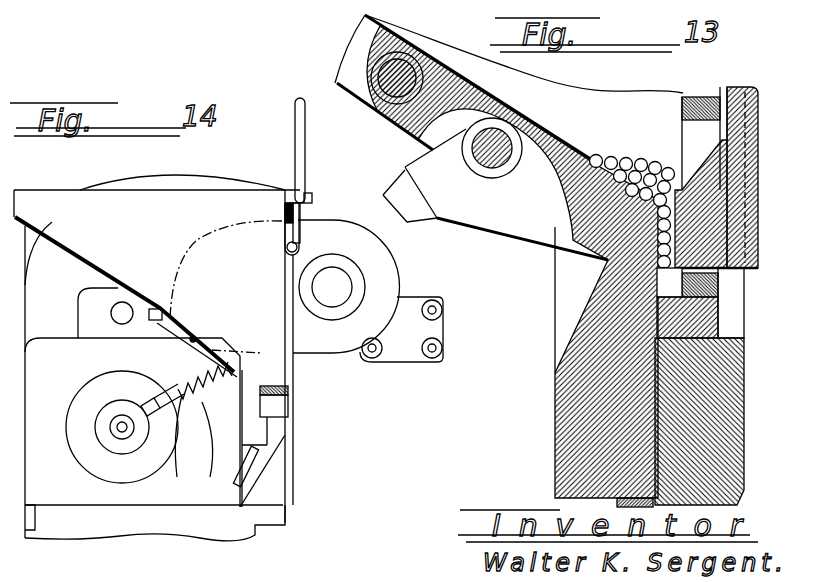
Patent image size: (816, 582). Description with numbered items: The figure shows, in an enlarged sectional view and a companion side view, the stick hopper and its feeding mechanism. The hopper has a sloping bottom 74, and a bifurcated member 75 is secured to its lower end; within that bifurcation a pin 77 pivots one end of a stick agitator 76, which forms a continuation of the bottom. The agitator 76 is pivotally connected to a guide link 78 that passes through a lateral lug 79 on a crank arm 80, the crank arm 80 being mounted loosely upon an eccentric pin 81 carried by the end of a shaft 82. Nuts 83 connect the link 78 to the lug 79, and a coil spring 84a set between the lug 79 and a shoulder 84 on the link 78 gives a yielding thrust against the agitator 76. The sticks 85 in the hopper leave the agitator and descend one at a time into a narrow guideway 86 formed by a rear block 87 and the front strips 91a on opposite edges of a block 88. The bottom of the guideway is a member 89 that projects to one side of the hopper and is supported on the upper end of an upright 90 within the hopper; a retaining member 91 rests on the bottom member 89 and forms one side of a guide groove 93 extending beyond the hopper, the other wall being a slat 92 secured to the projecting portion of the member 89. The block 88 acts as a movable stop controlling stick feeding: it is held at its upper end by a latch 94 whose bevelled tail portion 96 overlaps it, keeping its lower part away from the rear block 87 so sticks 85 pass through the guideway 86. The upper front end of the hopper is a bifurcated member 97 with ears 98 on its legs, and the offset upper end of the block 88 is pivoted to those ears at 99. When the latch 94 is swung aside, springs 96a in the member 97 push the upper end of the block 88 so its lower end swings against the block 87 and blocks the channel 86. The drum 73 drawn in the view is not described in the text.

In FIG. 14, the drum 73 is at (160, 210).
In FIG. 14, the sloping bottom 74 is at (114, 278).
In FIG. 14, the bifurcated member 75 is at (158, 322).
In FIG. 13, the bifurcated member 75 is at (358, 87).
In FIG. 14, the stick agitator 76 is at (233, 382).
In FIG. 13, the stick agitator 76 is at (570, 165).
In FIG. 14, the pin 77 is at (195, 337).
In FIG. 13, the pin 77 is at (364, 62).
In FIG. 14, the guide link 78 is at (193, 436).
In FIG. 13, the guide link 78 is at (446, 193).
In FIG. 14, the lateral lug 79 is at (197, 439).
In FIG. 14, the crank arm 80 is at (120, 409).
In FIG. 14, the eccentric pin 81 is at (144, 464).
In FIG. 14, the shaft 82 is at (112, 437).
In FIG. 14, the nuts 83 is at (144, 406).
In FIG. 14, the shoulder 84 is at (210, 370).
In FIG. 13, the shoulder 84 is at (403, 176).
In FIG. 14, the coil spring 84a is at (243, 494).
In FIG. 13, the sticks 85 is at (656, 160).
In FIG. 13, the narrow guideway 86 is at (668, 207).
In FIG. 13, the rear block 87 is at (590, 338).
In FIG. 14, the block 88 is at (320, 353).
In FIG. 13, the block 88 is at (722, 197).
In FIG. 14, the bottom member 89 is at (289, 408).
In FIG. 13, the bottom member 89 is at (700, 320).
In FIG. 13, the upright 90 is at (733, 445).
In FIG. 14, the retaining member 91 is at (289, 392).
In FIG. 13, the retaining member 91 is at (702, 283).
In FIG. 13, the front strips 91a is at (707, 100).
In FIG. 14, the slat 92 is at (263, 386).
In FIG. 14, the guide groove 93 is at (280, 386).
In FIG. 14, the latch 94 is at (303, 147).
In FIG. 14, the bevelled tail portion 96 is at (310, 216).
In FIG. 14, the springs 96a is at (283, 212).
In FIG. 14, the bifurcated member 97 is at (270, 195).
In FIG. 14, the ears 98 is at (291, 263).
In FIG. 14, the pivot 99 is at (287, 249).